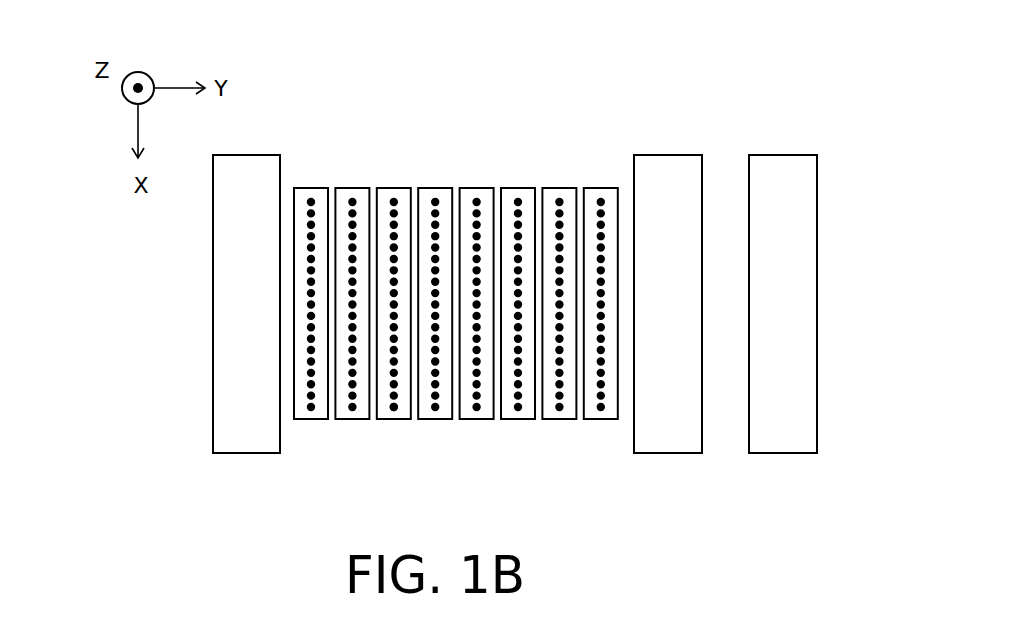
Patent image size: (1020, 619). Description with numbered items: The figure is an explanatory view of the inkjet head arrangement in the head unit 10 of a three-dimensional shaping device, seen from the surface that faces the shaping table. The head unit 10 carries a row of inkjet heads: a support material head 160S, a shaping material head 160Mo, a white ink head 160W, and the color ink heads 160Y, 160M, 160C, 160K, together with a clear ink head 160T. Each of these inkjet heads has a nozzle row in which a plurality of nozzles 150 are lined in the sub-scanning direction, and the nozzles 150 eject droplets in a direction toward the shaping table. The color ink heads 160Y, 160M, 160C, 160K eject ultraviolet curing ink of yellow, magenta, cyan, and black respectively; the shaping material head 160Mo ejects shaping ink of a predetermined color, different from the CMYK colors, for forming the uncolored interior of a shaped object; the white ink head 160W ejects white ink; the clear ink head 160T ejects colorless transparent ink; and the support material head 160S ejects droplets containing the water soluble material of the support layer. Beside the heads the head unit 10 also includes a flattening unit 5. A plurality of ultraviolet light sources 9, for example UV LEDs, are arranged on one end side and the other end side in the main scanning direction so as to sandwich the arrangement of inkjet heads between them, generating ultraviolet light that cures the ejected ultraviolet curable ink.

The head unit 10 is at (600, 81).
The ultraviolet light source 9 is at (239, 316).
The flattening unit 5 is at (661, 316).
The nozzle 150 is at (394, 412).
The support material head 160S is at (313, 188).
The shaping material head 160Mo is at (354, 188).
The white ink head 160W is at (396, 188).
The color ink head 160Y is at (437, 188).
The color ink head 160M is at (479, 188).
The color ink head 160C is at (520, 188).
The color ink head 160K is at (561, 188).
The clear ink head 160T is at (603, 188).